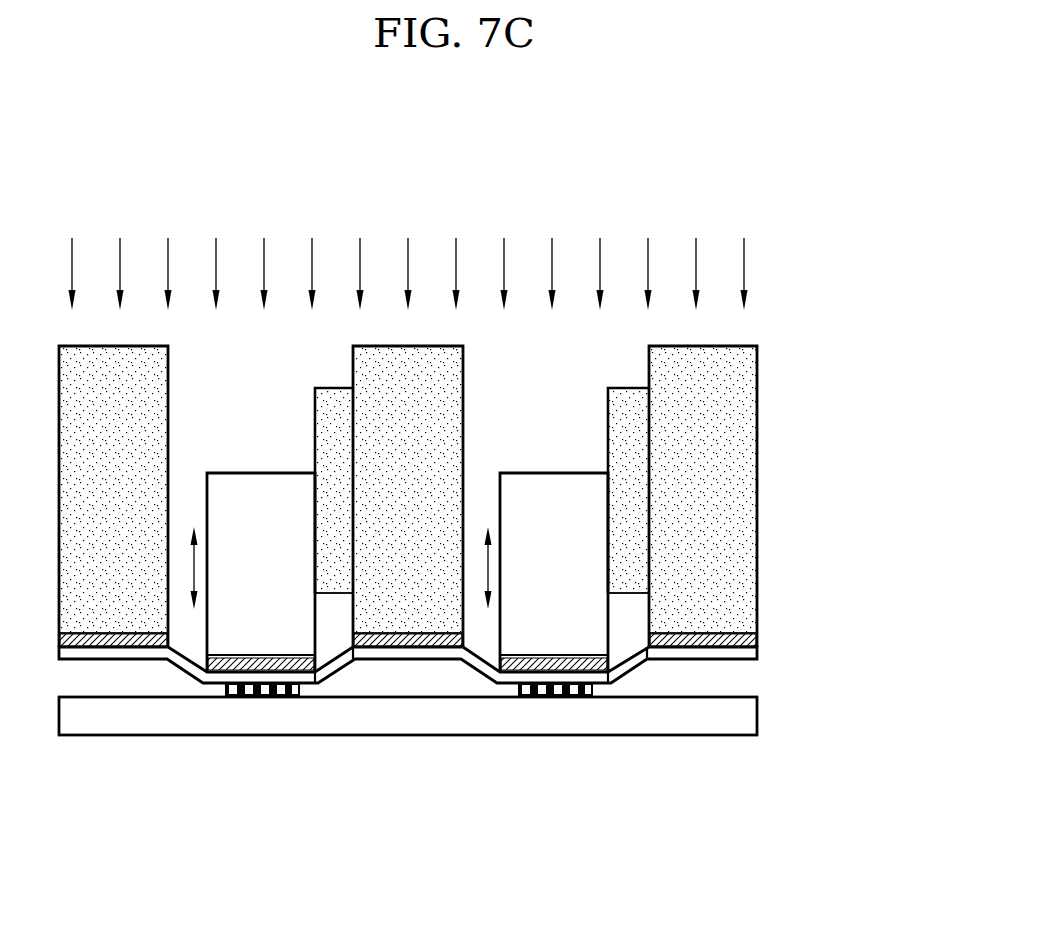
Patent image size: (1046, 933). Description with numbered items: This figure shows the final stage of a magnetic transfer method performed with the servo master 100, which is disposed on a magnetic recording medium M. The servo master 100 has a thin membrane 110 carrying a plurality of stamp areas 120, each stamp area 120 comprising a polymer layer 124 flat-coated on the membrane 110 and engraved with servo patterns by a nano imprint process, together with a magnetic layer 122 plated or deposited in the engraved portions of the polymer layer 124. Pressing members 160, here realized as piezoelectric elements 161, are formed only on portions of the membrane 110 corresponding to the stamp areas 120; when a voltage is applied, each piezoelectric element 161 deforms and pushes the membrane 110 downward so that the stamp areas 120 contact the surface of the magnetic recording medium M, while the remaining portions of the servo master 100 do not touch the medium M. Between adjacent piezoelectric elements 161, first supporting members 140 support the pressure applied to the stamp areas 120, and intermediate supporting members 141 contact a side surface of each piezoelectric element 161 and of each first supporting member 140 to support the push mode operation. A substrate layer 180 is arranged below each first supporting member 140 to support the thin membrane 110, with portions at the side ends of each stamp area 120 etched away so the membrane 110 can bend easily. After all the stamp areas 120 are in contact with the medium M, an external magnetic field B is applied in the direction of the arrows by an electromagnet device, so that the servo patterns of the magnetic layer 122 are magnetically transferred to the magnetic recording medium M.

The servo master 100 is at (783, 338).
The membrane 110 is at (752, 653).
The stamp area 120 is at (183, 793).
The magnetic layer 122 is at (237, 697).
The polymer layer 124 is at (225, 697).
The first supporting member 140 is at (745, 411).
The intermediate supporting member 141 is at (628, 400).
The pressing member 160 is at (527, 452).
The piezoelectric element 161 is at (557, 478).
The substrate layer 180 is at (757, 640).
The magnetic recording medium M is at (745, 715).
The external magnetic field B is at (408, 256).